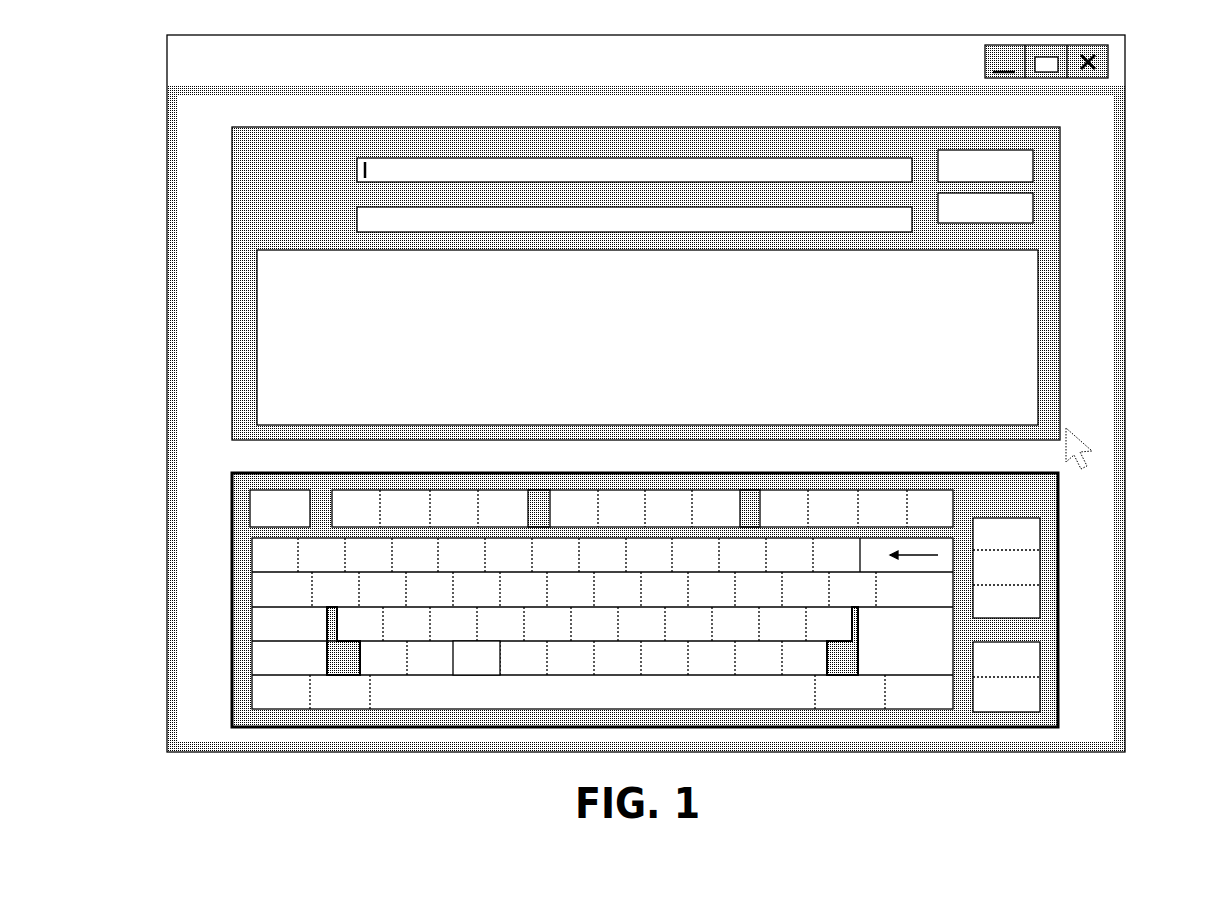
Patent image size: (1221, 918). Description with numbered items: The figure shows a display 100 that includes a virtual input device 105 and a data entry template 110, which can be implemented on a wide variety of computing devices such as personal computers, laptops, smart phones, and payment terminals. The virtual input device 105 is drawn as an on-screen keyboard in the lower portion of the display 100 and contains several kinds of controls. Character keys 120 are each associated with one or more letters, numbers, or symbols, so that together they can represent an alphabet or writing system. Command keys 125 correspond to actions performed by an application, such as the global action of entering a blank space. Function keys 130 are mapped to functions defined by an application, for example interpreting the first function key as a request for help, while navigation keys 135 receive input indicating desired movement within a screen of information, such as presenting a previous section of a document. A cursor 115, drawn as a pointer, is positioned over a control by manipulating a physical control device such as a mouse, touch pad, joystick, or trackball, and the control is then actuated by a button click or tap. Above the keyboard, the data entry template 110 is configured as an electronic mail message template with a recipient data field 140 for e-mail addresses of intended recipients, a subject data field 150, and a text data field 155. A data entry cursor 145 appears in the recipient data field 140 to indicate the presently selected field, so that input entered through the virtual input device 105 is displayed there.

The display 100 is at (1127, 258).
The virtual input device 105 is at (645, 627).
The data entry template 110 is at (688, 269).
The cursor 115 is at (1098, 455).
The character key 120 is at (478, 677).
The command key 125 is at (252, 507).
The function key 130 is at (427, 488).
The navigation key 135 is at (1043, 663).
The recipient data field 140 is at (447, 157).
The data entry cursor 145 is at (370, 167).
The subject data field 150 is at (607, 210).
The text data field 155 is at (257, 348).